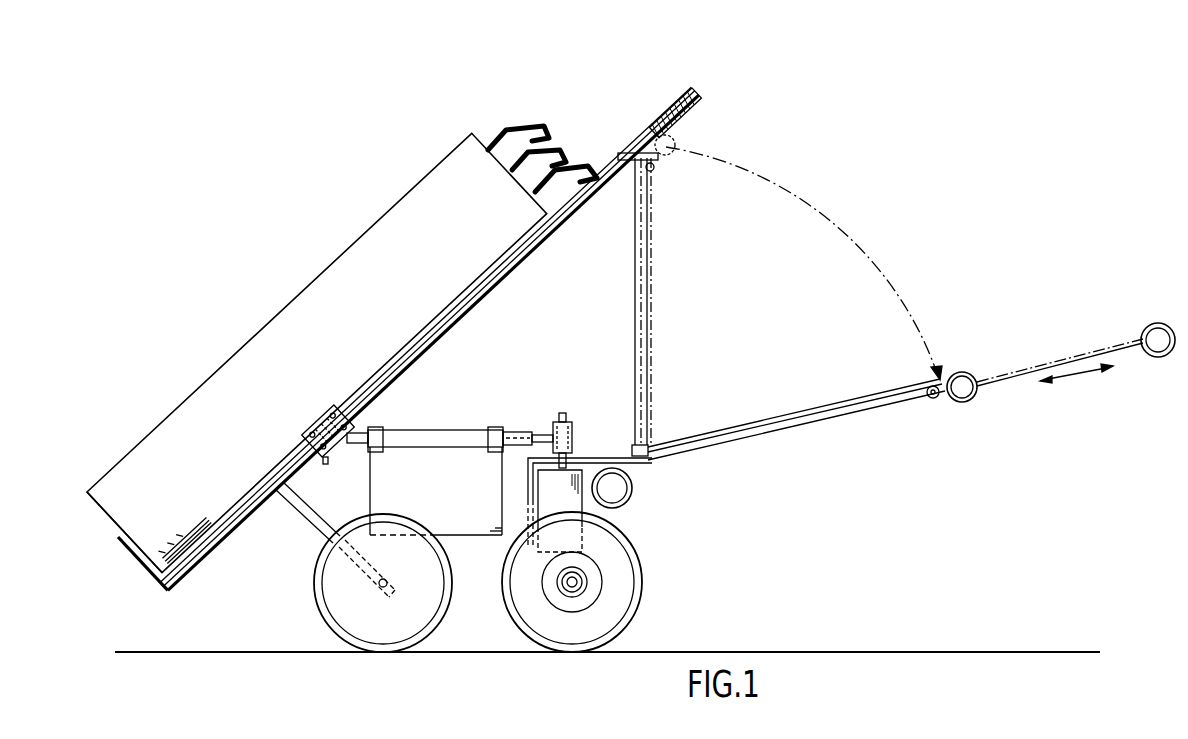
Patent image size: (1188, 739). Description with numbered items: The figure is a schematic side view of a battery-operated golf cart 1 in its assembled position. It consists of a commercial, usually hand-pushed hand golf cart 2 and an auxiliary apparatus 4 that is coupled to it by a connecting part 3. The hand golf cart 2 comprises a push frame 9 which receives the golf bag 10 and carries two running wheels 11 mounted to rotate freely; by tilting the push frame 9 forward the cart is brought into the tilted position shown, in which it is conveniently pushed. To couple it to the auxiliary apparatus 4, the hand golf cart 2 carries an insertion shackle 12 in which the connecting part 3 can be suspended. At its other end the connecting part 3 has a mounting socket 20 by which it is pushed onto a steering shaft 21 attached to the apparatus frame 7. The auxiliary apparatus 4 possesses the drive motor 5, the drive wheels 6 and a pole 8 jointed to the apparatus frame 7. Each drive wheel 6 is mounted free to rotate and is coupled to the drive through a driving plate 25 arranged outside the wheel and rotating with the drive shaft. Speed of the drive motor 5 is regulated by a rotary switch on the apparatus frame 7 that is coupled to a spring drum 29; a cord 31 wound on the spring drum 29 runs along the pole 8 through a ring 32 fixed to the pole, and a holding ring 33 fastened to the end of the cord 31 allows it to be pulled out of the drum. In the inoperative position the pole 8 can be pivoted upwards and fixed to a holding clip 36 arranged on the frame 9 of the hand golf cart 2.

The golf cart 1 is at (705, 335).
The hand golf cart 2 is at (326, 258).
The connecting part 3 is at (435, 436).
The auxiliary apparatus 4 is at (589, 434).
The drive motor 5 is at (575, 507).
The drive wheels 6 is at (617, 608).
The apparatus frame 7 is at (616, 456).
The pole 8 is at (797, 412).
The push frame 9 is at (204, 553).
The golf bag 10 is at (177, 424).
The running wheels 11 is at (328, 593).
The insertion shackle 12 is at (318, 413).
The mounting socket 20 is at (553, 432).
The steering shaft 21 is at (561, 413).
The driving plate 25 is at (598, 572).
The spring drum 29 is at (628, 492).
The cord 31 is at (790, 430).
The ring 32 is at (933, 400).
The holding ring 33 is at (965, 372).
The holding clip 36 is at (632, 153).